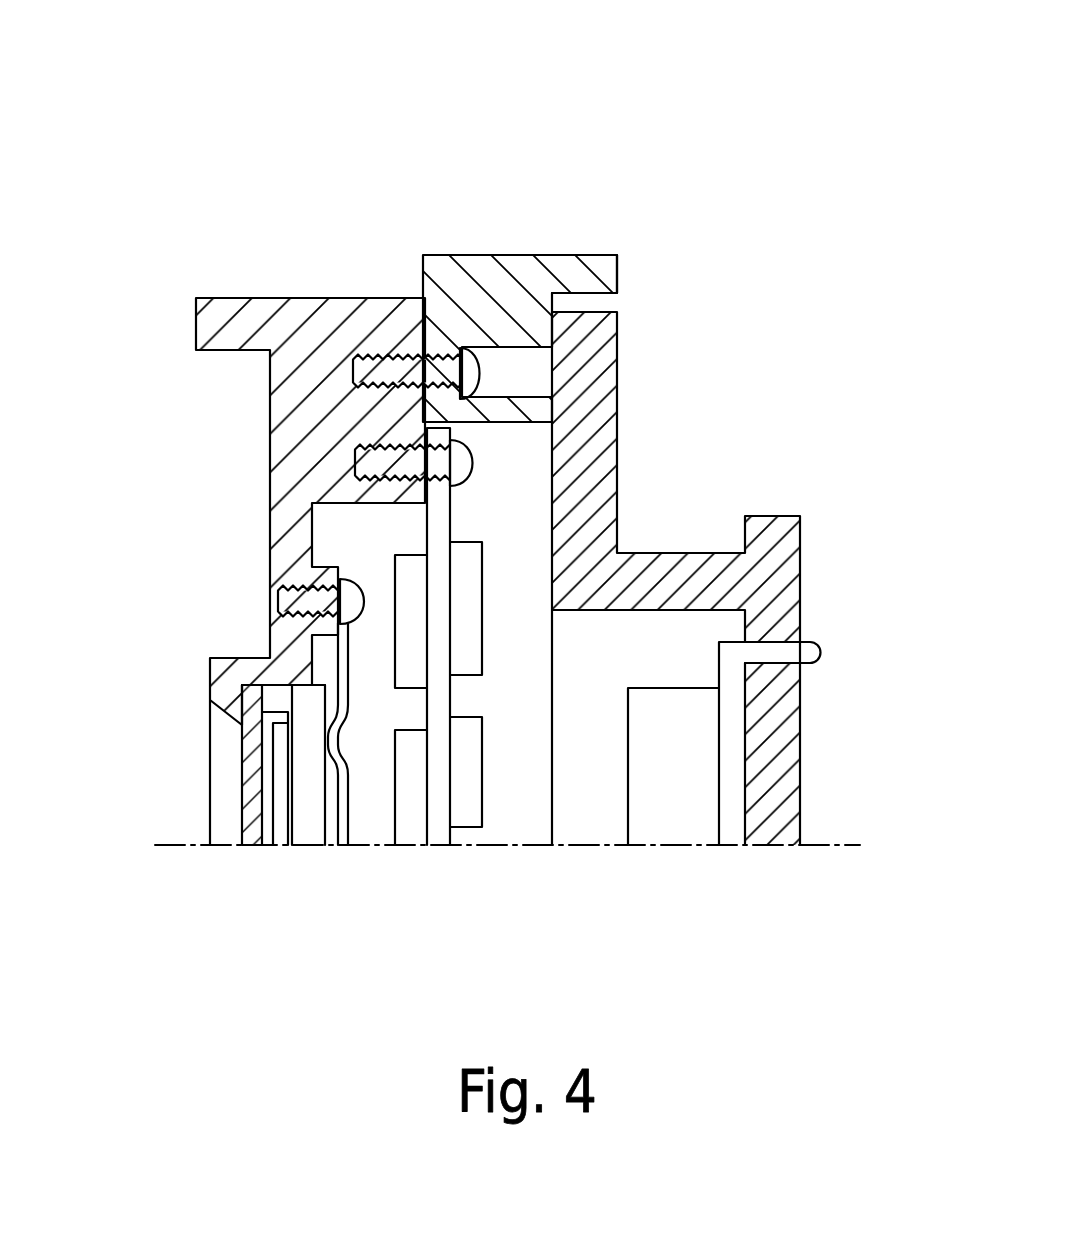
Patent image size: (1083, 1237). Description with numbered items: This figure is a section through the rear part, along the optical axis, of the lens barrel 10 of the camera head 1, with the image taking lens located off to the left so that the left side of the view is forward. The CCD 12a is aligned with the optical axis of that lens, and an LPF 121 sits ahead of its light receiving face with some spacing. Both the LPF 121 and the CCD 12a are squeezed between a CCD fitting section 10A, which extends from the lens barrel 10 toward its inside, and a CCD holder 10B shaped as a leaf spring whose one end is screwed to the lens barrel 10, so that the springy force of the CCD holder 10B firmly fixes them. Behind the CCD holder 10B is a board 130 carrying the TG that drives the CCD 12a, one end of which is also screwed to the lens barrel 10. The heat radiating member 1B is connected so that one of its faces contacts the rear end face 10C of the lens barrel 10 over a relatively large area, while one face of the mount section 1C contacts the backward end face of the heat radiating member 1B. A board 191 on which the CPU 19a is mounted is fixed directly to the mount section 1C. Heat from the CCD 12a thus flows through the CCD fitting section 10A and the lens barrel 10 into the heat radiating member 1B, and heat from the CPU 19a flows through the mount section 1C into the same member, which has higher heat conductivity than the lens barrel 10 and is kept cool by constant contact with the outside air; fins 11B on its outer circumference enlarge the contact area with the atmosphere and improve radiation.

The camera head 1 is at (703, 147).
The heat radiating member 1B is at (518, 267).
The mount section 1C is at (798, 528).
The lens barrel 10 is at (300, 313).
The CCD fitting section 10A is at (293, 668).
The CCD holder 10B is at (553, 333).
The rear end face 10C is at (425, 338).
The fins 11B is at (606, 278).
The LPF 121 is at (255, 825).
The CCD 12a is at (303, 822).
The board 130 is at (442, 822).
The CPU 19a is at (668, 814).
The board 191 is at (734, 814).